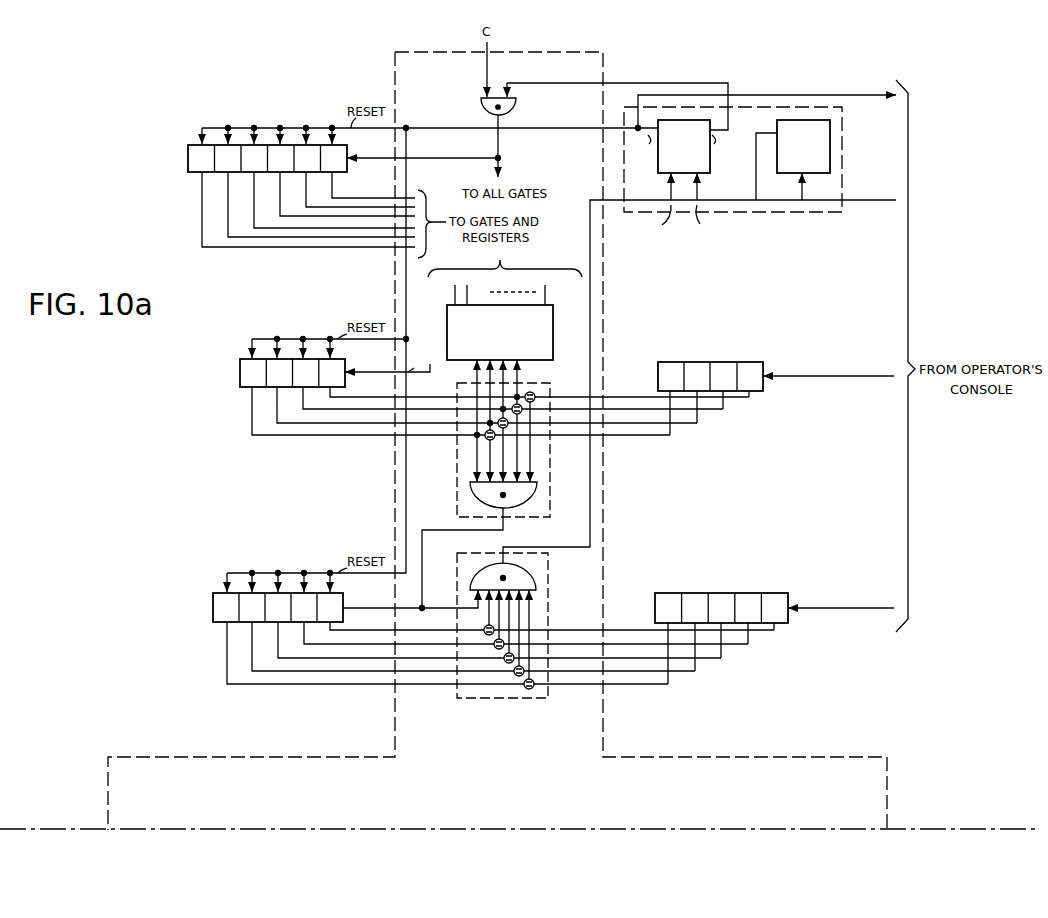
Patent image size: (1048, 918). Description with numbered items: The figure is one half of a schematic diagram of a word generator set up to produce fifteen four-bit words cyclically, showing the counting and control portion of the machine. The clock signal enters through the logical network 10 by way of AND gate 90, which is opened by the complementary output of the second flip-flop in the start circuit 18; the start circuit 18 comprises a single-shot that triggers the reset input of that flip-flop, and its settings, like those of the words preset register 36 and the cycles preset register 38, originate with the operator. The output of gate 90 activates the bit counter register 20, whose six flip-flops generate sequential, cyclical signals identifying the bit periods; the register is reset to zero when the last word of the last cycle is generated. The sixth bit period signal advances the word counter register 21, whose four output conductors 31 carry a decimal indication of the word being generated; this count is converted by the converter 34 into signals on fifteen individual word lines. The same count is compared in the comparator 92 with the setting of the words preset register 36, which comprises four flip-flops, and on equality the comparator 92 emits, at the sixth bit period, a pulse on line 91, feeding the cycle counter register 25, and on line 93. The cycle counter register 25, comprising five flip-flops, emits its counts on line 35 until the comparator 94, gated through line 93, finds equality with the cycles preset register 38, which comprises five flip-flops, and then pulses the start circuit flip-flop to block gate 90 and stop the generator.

The logical network 10 is at (553, 52).
The start circuit 18 is at (842, 172).
The bit counter register 20 is at (188, 158).
The word counter register 21 is at (240, 372).
The cycle counter register 25 is at (213, 608).
The output lines of word counter register 31 is at (331, 444).
The converter 34 is at (509, 353).
The output line of cycle counter register 35 is at (341, 692).
The words preset register 36 is at (766, 390).
The cycles preset register 38 is at (790, 624).
The AND gate 90 is at (515, 112).
The line 91 is at (390, 608).
The comparator 92 is at (457, 475).
The line 93 is at (456, 612).
The comparator 94 is at (460, 700).